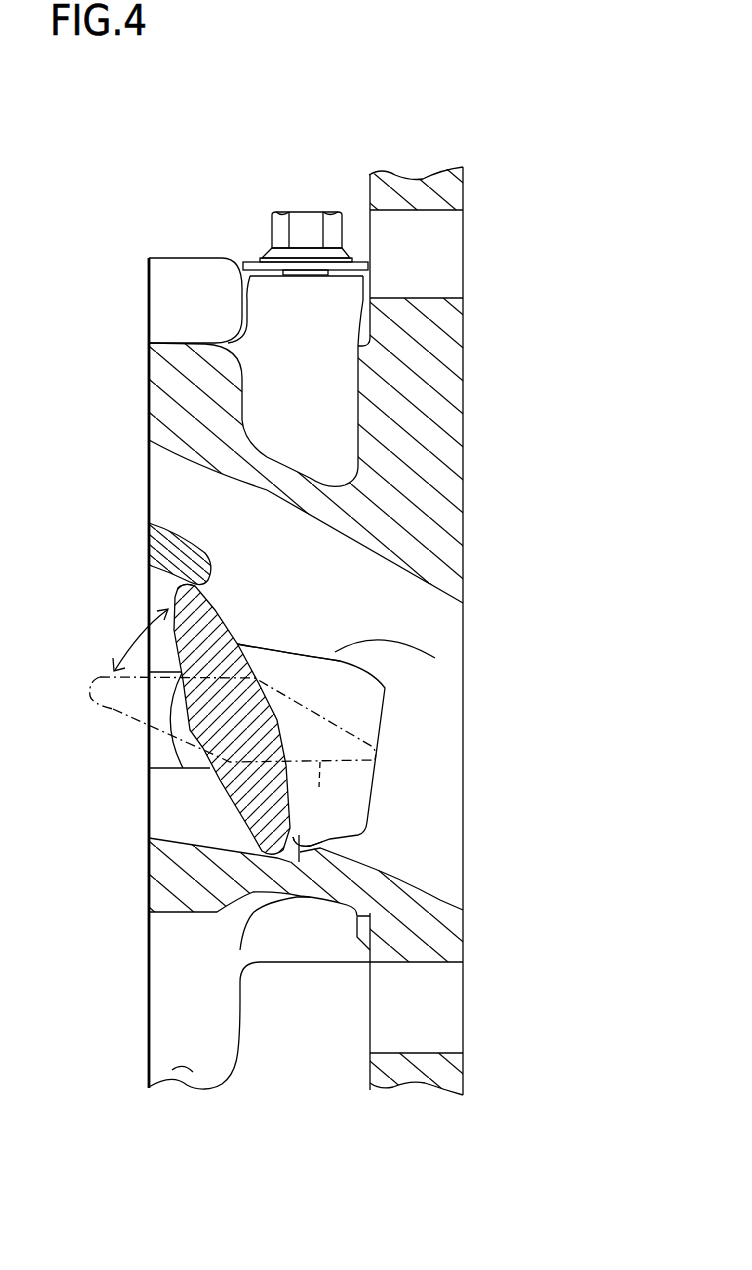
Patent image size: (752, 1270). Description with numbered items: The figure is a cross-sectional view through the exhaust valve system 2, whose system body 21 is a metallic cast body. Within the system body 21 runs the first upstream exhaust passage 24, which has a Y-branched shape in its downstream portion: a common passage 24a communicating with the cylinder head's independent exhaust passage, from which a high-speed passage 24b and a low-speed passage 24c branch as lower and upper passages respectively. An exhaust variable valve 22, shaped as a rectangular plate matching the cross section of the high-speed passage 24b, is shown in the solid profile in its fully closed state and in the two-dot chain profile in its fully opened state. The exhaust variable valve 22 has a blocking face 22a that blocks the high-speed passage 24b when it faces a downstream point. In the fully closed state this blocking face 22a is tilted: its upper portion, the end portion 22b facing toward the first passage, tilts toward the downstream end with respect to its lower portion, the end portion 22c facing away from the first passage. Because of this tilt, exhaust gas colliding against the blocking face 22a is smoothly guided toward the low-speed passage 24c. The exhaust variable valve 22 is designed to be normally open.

The exhaust valve system 2 is at (190, 184).
The system body 21 is at (176, 257).
The exhaust variable valve 22 is at (283, 783).
The blocking face 22a is at (253, 660).
The end portion facing toward the first passage 22b is at (205, 587).
The end portion facing away from the first passage 22c is at (320, 842).
The first upstream exhaust passage 24 is at (303, 658).
The common passage 24a is at (440, 823).
The high-speed passage 24b is at (170, 802).
The low-speed passage 24c is at (170, 491).